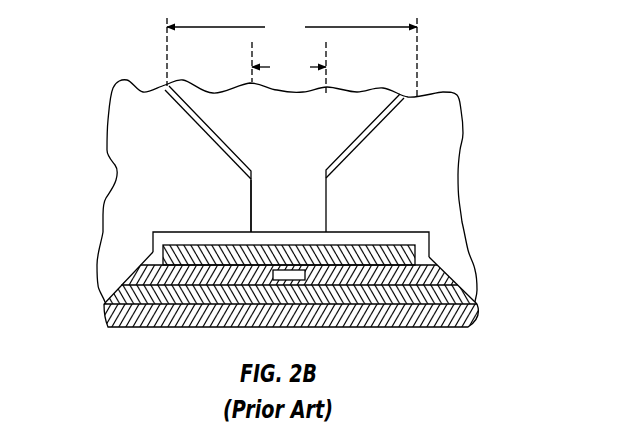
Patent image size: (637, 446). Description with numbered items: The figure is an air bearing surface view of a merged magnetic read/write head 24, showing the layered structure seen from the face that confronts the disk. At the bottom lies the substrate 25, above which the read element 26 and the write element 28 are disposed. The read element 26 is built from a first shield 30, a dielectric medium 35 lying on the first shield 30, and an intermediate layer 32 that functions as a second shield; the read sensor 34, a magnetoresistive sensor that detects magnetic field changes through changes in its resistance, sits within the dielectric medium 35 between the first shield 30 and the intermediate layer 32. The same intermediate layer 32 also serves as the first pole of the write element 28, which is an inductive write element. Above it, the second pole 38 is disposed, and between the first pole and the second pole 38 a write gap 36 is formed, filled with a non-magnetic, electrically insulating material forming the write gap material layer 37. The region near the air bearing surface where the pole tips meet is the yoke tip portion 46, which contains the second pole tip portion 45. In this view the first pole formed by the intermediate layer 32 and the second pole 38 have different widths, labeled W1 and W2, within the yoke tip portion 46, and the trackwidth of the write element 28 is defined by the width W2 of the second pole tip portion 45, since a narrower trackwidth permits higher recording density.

The merged magnetic read/write head 24 is at (466, 56).
The yoke tip portion 46 is at (487, 170).
The write element 28 is at (87, 97).
The read element 26 is at (58, 245).
The second pole 38 is at (302, 153).
The second pole tip portion 45 is at (268, 200).
The write gap 36 is at (313, 240).
The write gap material layer 37 is at (160, 253).
The intermediate layer 32 is at (420, 257).
The dielectric medium 35 is at (420, 281).
The read sensor 34 is at (289, 281).
The first shield 30 is at (432, 293).
The substrate 25 is at (427, 317).